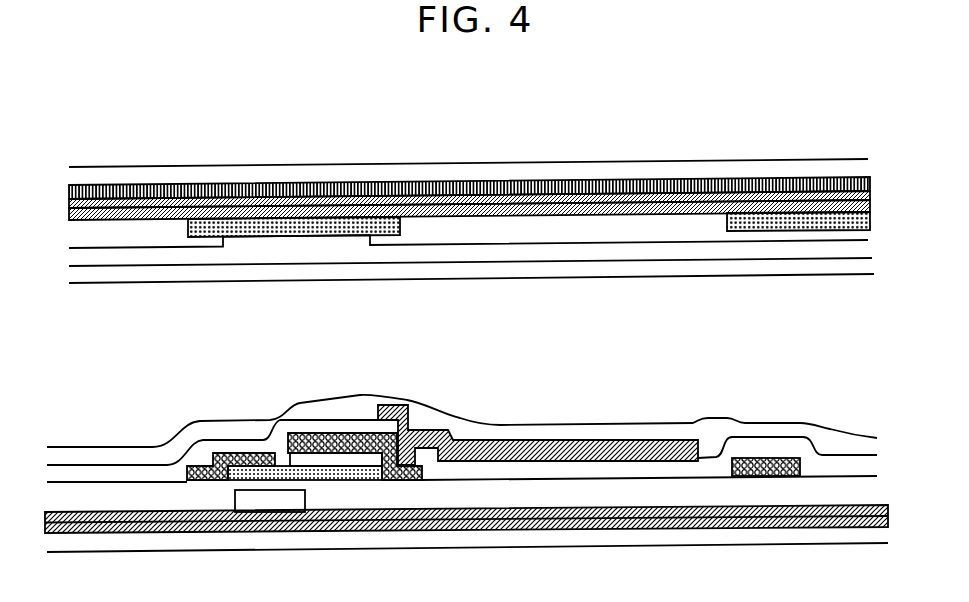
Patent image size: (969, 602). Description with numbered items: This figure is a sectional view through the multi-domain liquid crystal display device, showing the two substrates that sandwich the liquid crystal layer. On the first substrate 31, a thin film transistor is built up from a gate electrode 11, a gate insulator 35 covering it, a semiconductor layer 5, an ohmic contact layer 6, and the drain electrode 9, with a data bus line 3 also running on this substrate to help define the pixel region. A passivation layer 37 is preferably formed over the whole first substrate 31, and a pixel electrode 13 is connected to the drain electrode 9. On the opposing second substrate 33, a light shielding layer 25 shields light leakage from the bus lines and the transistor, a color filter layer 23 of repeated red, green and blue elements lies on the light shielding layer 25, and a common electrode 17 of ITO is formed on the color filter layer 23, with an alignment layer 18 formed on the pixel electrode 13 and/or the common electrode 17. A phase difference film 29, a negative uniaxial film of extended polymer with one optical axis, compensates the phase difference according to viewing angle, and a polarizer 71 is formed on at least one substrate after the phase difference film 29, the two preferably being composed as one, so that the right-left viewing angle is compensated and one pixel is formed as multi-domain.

The data bus line 3 is at (218, 460).
The semiconductor layer 5 is at (337, 470).
The ohmic contact layer 6 is at (372, 458).
The drain electrode 9 is at (306, 446).
The gate electrode 11 is at (267, 500).
The pixel electrode 13 is at (537, 445).
The common electrode 17 is at (250, 252).
The alignment layer 18 is at (510, 266).
The color filter layer 23 is at (437, 233).
The light shielding layer 25 is at (303, 238).
The phase difference film 29 is at (511, 184).
The first substrate 31 is at (555, 515).
The second substrate 33 is at (617, 208).
The gate insulator 35 is at (467, 497).
The passivation layer 37 is at (577, 472).
The polarizer 71 is at (288, 181).